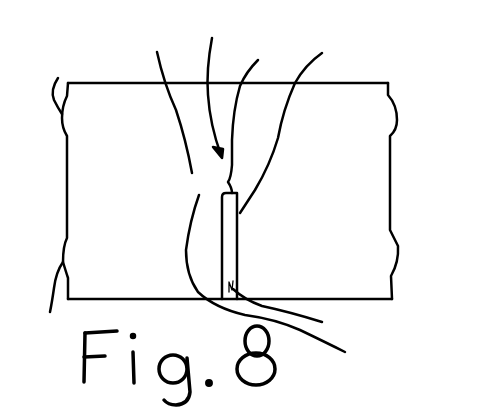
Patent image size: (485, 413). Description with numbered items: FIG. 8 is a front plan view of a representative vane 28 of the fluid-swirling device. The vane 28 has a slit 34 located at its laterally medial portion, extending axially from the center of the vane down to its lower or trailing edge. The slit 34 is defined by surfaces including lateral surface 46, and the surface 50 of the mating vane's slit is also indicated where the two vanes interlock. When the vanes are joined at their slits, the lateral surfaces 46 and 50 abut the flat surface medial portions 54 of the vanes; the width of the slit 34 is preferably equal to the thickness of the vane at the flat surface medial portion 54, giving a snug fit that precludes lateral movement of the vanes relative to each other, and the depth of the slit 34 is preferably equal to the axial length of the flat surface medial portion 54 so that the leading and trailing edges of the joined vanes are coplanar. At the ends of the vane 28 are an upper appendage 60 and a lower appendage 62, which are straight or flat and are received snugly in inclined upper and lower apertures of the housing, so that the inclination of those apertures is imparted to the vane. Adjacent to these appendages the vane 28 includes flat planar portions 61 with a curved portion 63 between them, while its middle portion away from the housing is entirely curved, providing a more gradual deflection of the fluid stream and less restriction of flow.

The vane 28 is at (172, 173).
The upper appendage 60 is at (60, 77).
The lower appendage 62 is at (56, 309).
The flat planar portion 61 is at (166, 98).
The flat surface medial portion 54 is at (211, 85).
The slit surface 50 is at (246, 167).
The slit surface 46 is at (302, 122).
The slit 34 is at (296, 312).
The curved portion 63 is at (284, 286).